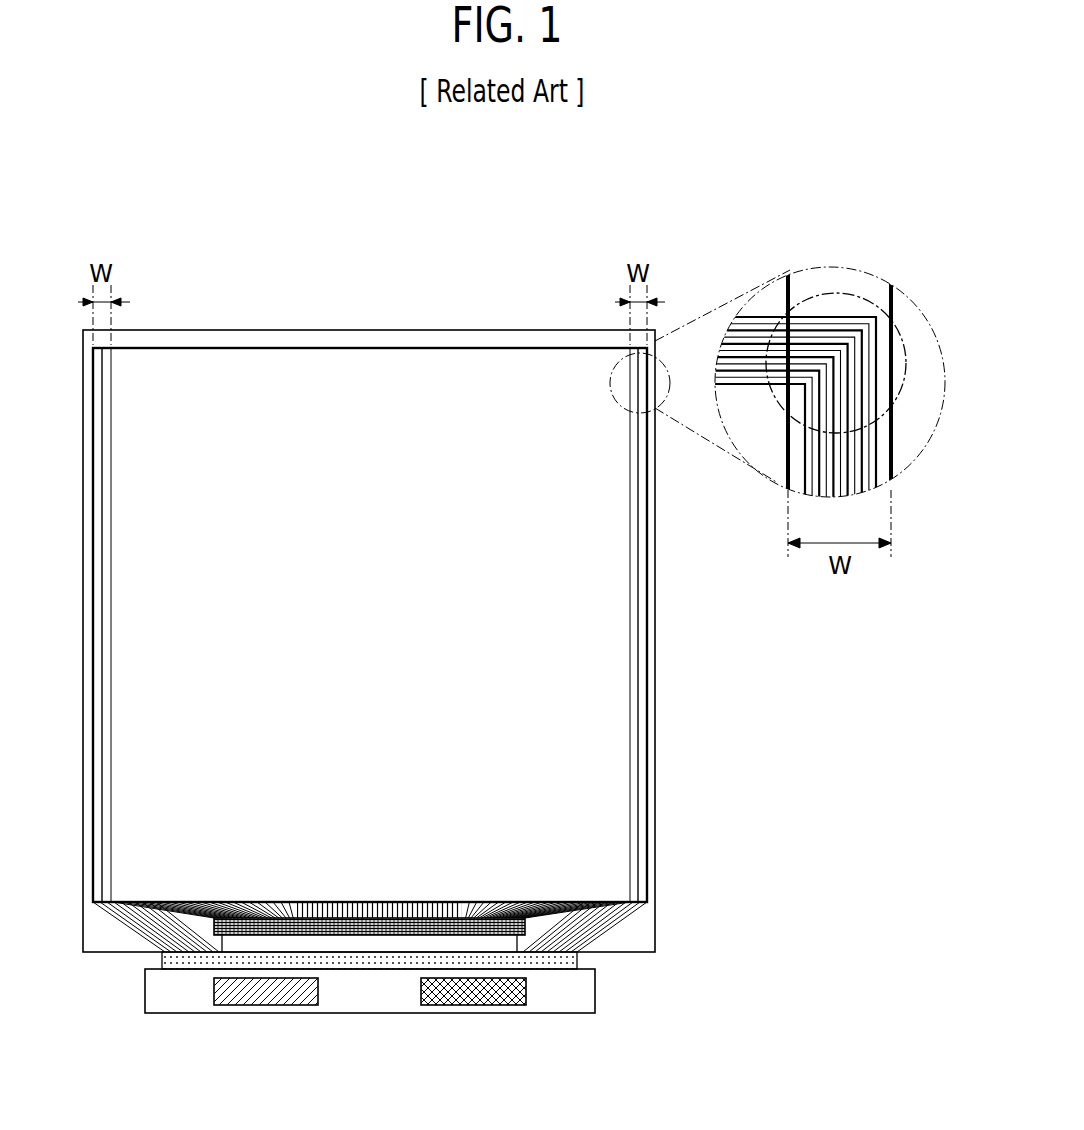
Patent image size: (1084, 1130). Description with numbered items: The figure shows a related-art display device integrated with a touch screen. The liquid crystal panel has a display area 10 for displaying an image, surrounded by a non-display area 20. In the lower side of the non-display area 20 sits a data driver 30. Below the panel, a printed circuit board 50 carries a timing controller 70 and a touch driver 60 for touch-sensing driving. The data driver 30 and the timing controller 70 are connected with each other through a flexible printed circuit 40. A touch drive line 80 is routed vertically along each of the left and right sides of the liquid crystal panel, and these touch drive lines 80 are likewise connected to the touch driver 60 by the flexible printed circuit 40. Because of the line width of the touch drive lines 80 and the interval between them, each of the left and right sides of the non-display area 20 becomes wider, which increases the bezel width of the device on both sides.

The display area 10 is at (330, 358).
The non-display area 20 is at (461, 341).
The data driver 30 is at (393, 927).
The flexible printed circuit 40 is at (181, 962).
The printed circuit board 50 is at (350, 1014).
The touch driver 60 is at (258, 995).
The timing controller 70 is at (465, 997).
The touch drive line 80 is at (768, 400).